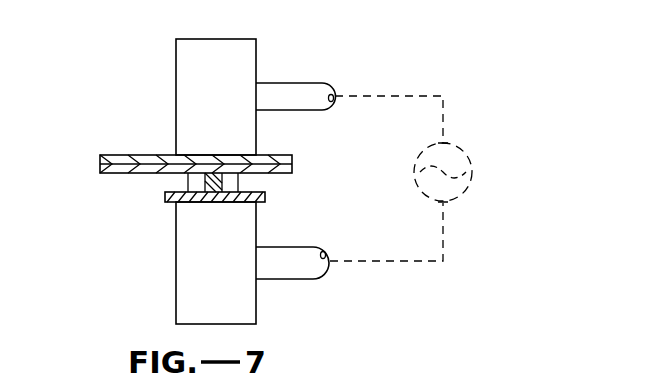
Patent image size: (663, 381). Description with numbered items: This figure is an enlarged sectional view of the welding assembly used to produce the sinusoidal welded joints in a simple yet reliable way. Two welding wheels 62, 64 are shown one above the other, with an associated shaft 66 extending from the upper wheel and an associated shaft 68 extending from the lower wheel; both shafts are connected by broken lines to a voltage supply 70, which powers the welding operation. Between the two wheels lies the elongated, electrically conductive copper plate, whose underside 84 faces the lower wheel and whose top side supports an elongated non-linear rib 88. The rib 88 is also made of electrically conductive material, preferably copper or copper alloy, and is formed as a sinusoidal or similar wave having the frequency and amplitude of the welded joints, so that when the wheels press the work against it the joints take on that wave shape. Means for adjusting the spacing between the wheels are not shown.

The welding wheel 62 is at (227, 50).
The welding wheel 64 is at (176, 271).
The shaft 66 is at (293, 95).
The shaft 68 is at (305, 263).
The voltage supply 70 is at (462, 150).
The underside 84 is at (265, 196).
The non-linear rib 88 is at (185, 180).